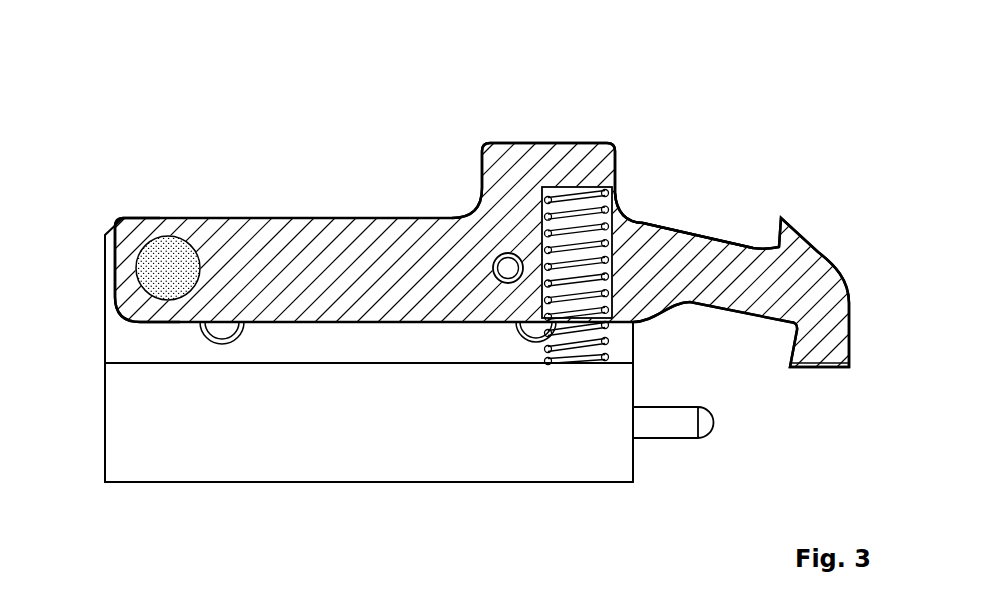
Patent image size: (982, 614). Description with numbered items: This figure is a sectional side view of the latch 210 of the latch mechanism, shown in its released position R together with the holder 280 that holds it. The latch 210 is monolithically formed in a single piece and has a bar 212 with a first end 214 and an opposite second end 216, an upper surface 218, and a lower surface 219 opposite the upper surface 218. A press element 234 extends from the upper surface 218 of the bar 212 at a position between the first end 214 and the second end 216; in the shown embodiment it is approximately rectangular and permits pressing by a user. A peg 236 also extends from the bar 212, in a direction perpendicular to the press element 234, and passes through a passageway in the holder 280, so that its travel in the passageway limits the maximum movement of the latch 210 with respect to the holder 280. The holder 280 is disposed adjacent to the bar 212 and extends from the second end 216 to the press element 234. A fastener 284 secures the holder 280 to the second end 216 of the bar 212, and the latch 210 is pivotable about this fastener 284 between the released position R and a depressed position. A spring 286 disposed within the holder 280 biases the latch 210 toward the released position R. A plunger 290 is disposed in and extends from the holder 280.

The latch 210 is at (744, 80).
The released position R is at (646, 68).
The bar 212 is at (690, 273).
The first end 214 is at (817, 243).
The second end 216 is at (145, 203).
The upper surface 218 is at (717, 243).
The lower surface 219 is at (730, 310).
The press element 234 is at (522, 145).
The peg 236 is at (507, 268).
The holder 280 is at (96, 450).
The fastener 284 is at (180, 257).
The spring 286 is at (556, 326).
The plunger 290 is at (670, 434).